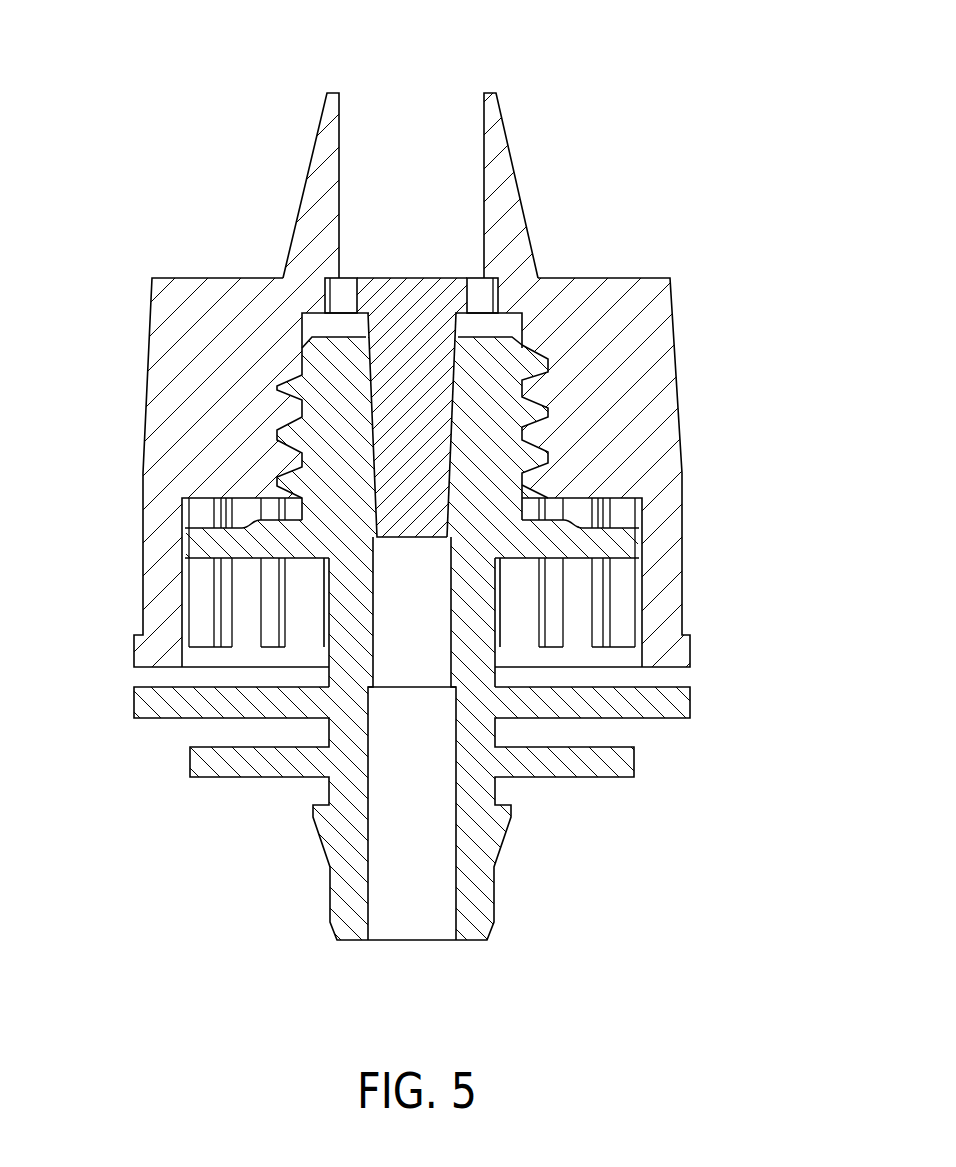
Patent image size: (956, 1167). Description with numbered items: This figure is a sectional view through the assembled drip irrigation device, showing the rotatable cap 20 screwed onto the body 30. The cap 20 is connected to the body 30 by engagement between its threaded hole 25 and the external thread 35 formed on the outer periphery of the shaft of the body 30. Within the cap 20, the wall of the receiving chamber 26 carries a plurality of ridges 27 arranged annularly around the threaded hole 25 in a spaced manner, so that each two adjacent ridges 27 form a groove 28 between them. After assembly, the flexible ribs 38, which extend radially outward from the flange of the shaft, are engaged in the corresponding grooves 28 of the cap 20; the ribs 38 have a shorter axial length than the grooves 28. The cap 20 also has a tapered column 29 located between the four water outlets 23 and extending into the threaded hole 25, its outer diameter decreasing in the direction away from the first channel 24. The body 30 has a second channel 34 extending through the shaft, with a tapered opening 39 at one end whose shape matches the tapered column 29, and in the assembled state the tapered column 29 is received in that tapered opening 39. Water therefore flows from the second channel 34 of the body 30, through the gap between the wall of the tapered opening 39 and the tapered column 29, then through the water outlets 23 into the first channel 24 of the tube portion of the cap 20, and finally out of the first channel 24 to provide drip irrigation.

The rotatable cap 20 is at (633, 272).
The water outlets 23 is at (347, 290).
The first channel 24 is at (408, 135).
The threaded hole 25 is at (290, 390).
The receiving chamber 26 is at (198, 493).
The ridges 27 is at (247, 625).
The groove 28 is at (303, 628).
The tapered column 29 is at (432, 399).
The body 30 is at (530, 887).
The second channel 34 is at (413, 908).
The external thread 35 is at (293, 377).
The flexible ribs 38 is at (205, 540).
The tapered opening 39 is at (455, 451).